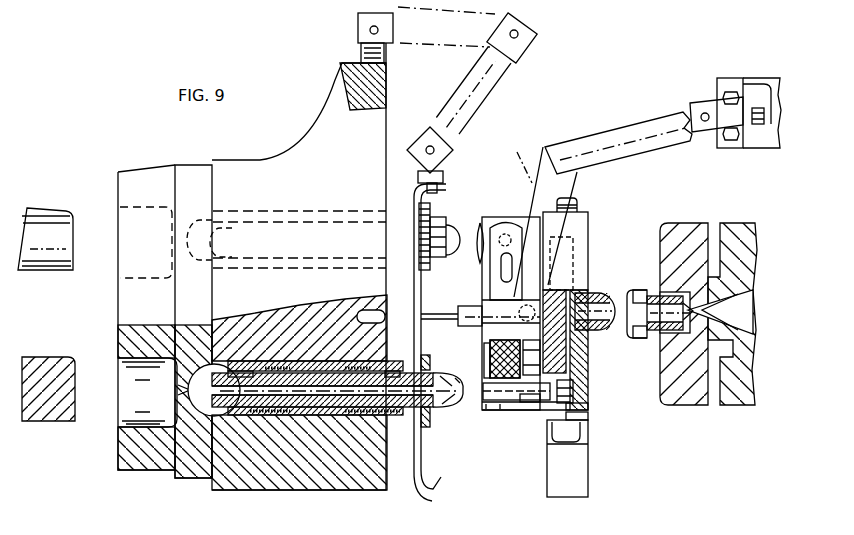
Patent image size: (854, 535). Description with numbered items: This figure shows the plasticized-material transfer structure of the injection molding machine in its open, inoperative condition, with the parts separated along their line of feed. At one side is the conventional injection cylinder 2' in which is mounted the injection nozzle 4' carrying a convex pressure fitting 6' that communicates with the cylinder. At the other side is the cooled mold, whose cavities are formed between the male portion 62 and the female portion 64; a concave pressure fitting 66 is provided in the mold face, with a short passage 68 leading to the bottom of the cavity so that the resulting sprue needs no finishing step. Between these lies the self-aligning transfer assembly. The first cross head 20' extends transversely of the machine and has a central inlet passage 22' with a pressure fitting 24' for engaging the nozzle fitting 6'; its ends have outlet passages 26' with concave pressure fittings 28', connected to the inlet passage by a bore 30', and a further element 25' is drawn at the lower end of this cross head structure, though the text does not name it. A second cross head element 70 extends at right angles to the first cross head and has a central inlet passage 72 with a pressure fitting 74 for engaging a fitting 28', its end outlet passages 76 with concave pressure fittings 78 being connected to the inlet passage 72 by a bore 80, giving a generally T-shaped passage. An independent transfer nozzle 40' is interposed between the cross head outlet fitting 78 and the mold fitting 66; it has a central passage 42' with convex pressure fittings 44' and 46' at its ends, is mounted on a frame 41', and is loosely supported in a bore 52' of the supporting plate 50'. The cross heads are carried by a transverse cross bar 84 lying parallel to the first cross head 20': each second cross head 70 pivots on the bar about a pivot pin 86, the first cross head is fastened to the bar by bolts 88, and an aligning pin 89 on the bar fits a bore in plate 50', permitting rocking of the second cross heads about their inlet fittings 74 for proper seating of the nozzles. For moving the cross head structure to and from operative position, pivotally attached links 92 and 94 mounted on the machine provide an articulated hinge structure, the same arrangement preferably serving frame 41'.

The injection cylinder 2' is at (708, 295).
The injection nozzle 4' is at (660, 298).
The convex pressure fitting 6' is at (635, 332).
The first cross head 20' is at (584, 244).
The central inlet passage 22' is at (596, 293).
The pressure fitting 24' is at (596, 332).
The lower bracket 25' is at (568, 473).
The outlet passages 26' is at (596, 415).
The concave pressure fittings 28' is at (594, 431).
The bore 30' is at (585, 350).
The transfer nozzles 40' is at (336, 446).
The frame 41' is at (442, 348).
The central passage 42' is at (315, 440).
The convex pressure fitting 44' is at (448, 403).
The convex pressure fitting 46' is at (207, 333).
The supporting plate 50' is at (287, 266).
The bore 52' is at (312, 443).
The male portion 62 is at (54, 215).
The female portion 64 is at (150, 180).
The concave pressure fittings 66 is at (188, 378).
The passage 68 is at (178, 380).
The cross head elements 70 is at (498, 225).
The central inlet passage 72 is at (520, 413).
The pressure fitting 74 is at (525, 404).
The outlet passages 76 is at (495, 402).
The concave pressure fittings 78 is at (482, 404).
The bore 80 is at (517, 420).
The transverse cross bar 84 is at (488, 265).
The pivot pin 86 is at (488, 348).
The bolts 88 is at (480, 328).
The aligning pin 89 is at (432, 311).
The links 92 is at (542, 215).
The links 94 is at (598, 132).